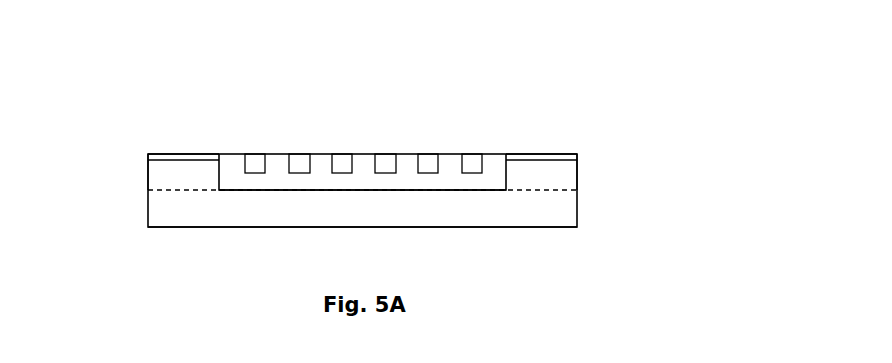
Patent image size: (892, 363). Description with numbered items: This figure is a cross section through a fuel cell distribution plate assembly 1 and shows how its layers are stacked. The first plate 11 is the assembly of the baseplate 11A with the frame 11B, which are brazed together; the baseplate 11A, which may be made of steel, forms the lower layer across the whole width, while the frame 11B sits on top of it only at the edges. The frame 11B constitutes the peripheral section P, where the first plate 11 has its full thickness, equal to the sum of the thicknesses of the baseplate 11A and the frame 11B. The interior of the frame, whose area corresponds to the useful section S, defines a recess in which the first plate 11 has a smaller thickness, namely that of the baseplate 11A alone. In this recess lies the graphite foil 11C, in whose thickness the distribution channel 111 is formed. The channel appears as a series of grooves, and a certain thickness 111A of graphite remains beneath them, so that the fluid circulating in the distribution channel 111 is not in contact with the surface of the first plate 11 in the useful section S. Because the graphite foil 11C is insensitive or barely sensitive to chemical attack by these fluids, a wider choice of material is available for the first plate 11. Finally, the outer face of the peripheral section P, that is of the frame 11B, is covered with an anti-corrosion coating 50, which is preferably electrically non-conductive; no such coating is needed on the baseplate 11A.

The stage 1 is at (520, 247).
The first plate 11 is at (587, 185).
The baseplate 11A is at (168, 205).
The frame 11B is at (168, 172).
The graphite foil 11C is at (232, 165).
The distribution channel 111 is at (302, 164).
The thickness of graphite 111A is at (297, 182).
The anti-corrosion coating 50 is at (162, 158).
The peripheral section P is at (167, 137).
The useful section S is at (507, 87).